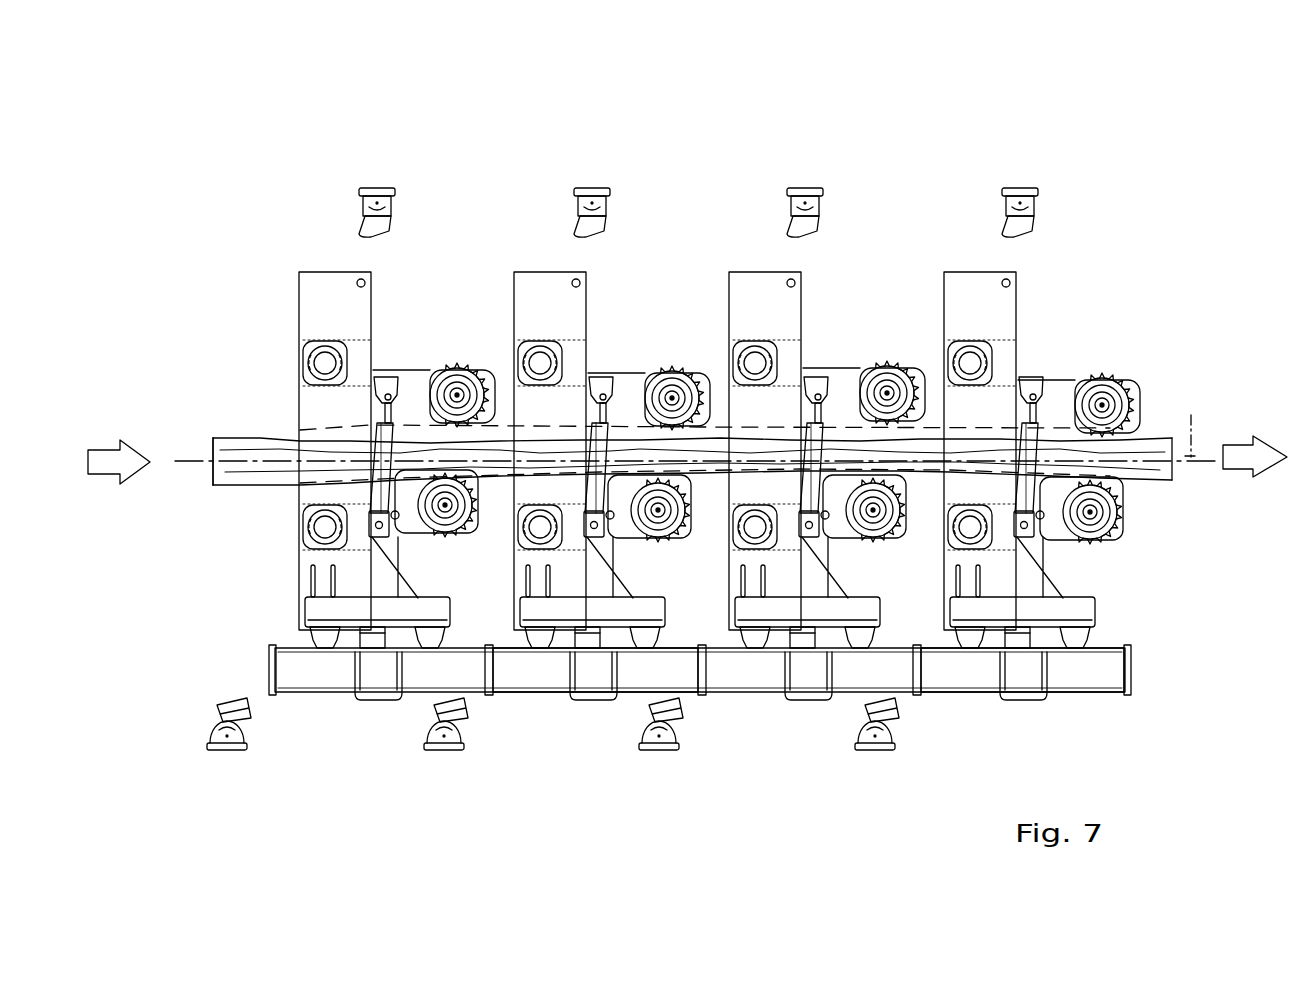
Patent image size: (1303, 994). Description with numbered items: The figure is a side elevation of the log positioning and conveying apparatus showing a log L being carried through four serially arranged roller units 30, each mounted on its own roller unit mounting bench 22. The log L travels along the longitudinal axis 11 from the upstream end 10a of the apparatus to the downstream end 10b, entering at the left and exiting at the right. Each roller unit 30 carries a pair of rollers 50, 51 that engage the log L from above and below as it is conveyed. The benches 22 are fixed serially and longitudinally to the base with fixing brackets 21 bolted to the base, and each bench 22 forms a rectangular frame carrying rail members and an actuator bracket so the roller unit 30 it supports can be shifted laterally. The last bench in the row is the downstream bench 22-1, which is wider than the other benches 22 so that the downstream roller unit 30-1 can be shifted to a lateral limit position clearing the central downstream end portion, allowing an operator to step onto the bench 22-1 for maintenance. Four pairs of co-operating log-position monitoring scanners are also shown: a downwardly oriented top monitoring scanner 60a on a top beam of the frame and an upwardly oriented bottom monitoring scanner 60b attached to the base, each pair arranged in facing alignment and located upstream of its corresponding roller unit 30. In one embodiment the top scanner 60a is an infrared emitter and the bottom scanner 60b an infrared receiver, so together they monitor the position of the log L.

The log L is at (243, 412).
The upstream end 10a is at (252, 435).
The longitudinal axis 11 is at (1191, 415).
The roller unit 30 is at (312, 302).
The downstream roller unit 30-1 is at (770, 323).
The roller 50 is at (1108, 378).
The roller 51 is at (1117, 538).
The downstream end 10b is at (774, 722).
The fixing bracket 21 is at (815, 705).
The roller unit mounting bench 22 is at (540, 673).
The downstream bench 22-1 is at (1090, 677).
The top monitoring scanner 60a is at (387, 222).
The bottom monitoring scanner 60b is at (243, 722).